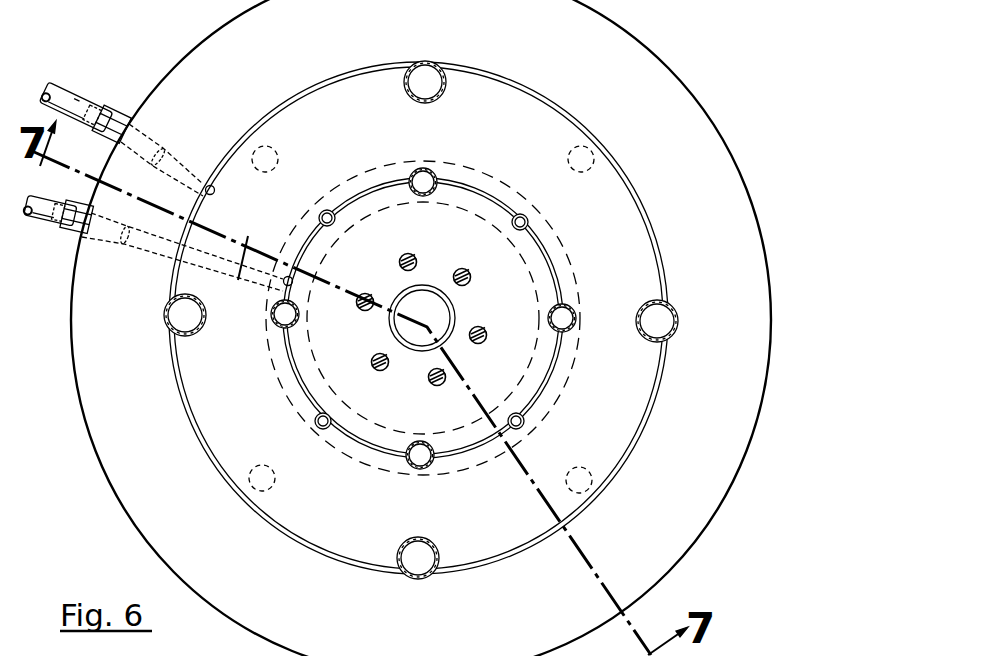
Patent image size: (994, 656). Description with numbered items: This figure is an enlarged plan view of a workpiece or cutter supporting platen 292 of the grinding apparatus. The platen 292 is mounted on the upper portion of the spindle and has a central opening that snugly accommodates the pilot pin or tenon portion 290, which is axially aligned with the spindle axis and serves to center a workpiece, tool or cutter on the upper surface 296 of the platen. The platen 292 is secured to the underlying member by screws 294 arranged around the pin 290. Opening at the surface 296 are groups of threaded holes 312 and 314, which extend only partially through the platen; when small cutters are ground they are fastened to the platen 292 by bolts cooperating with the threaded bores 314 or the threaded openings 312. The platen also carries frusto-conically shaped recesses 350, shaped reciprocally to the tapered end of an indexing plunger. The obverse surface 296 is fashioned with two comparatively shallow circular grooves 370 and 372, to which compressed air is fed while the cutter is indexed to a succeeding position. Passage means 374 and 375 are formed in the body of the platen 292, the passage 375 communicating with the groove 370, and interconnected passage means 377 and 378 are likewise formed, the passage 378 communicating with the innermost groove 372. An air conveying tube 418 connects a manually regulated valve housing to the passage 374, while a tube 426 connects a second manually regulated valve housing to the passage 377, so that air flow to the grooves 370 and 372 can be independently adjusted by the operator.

The pilot pin or tenon portion 290 is at (437, 306).
The workpiece or cutter supporting platen 292 is at (621, 15).
The screws 294 is at (463, 268).
The upper surface of the platen 296 is at (559, 65).
The threaded openings 312 is at (423, 74).
The threaded bores 314 is at (421, 176).
The frusto-conically shaped recesses 350 is at (281, 158).
The circular groove 370 is at (654, 207).
The circular groove 372 is at (546, 226).
The passage means 374 is at (189, 127).
The passage means 375 is at (216, 194).
The passage means 377 is at (162, 252).
The passage means 378 is at (295, 281).
The air conveying tube 418 is at (70, 82).
The tube 426 is at (40, 224).